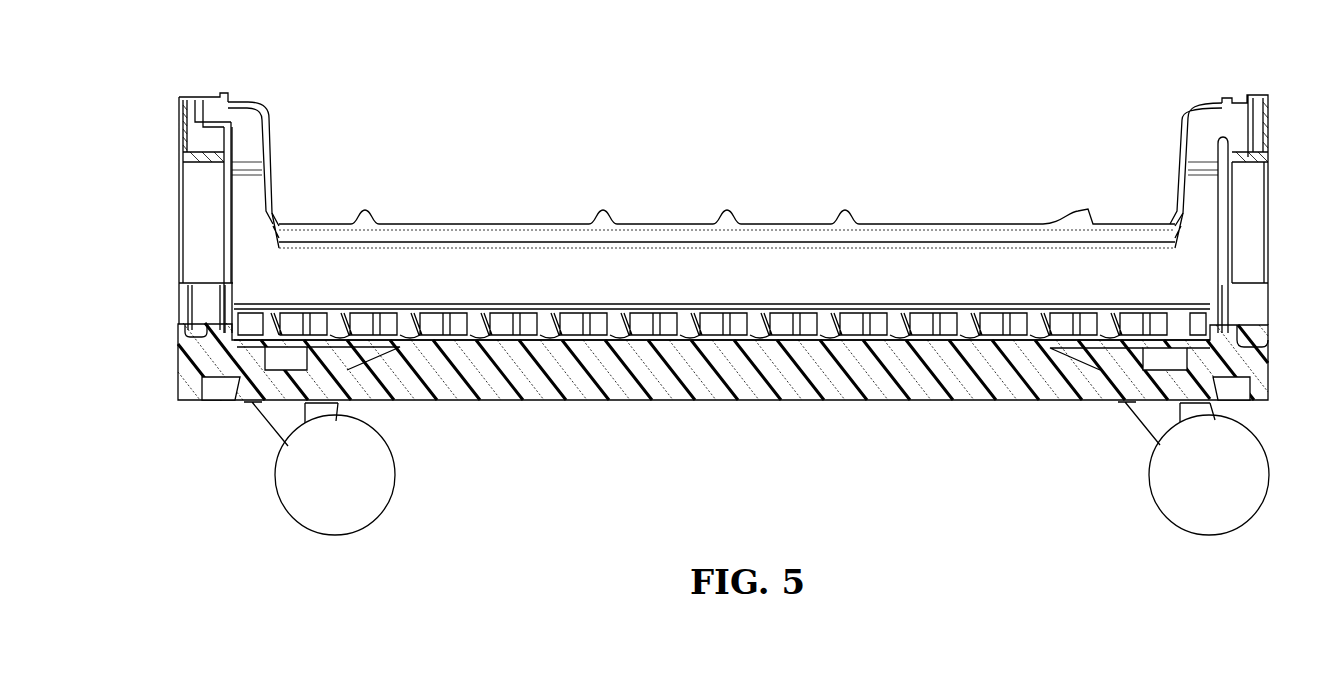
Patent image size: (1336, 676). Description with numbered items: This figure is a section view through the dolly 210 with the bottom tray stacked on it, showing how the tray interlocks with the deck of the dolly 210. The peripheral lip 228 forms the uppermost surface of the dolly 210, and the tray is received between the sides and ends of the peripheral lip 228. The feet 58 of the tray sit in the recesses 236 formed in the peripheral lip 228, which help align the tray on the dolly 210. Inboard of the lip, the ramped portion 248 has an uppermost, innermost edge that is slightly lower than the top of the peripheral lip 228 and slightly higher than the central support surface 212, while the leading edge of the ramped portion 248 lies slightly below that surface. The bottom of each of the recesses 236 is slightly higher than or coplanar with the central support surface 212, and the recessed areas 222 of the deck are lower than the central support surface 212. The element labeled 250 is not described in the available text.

The feet 58 is at (185, 304).
The dolly 210 is at (862, 399).
The central support surface 212 is at (617, 338).
The recessed areas 222 is at (227, 335).
The peripheral lip 228 is at (180, 316).
The recesses 236 is at (193, 312).
The ramped portion 248 is at (1262, 332).
The right housing lip 250 is at (1187, 108).